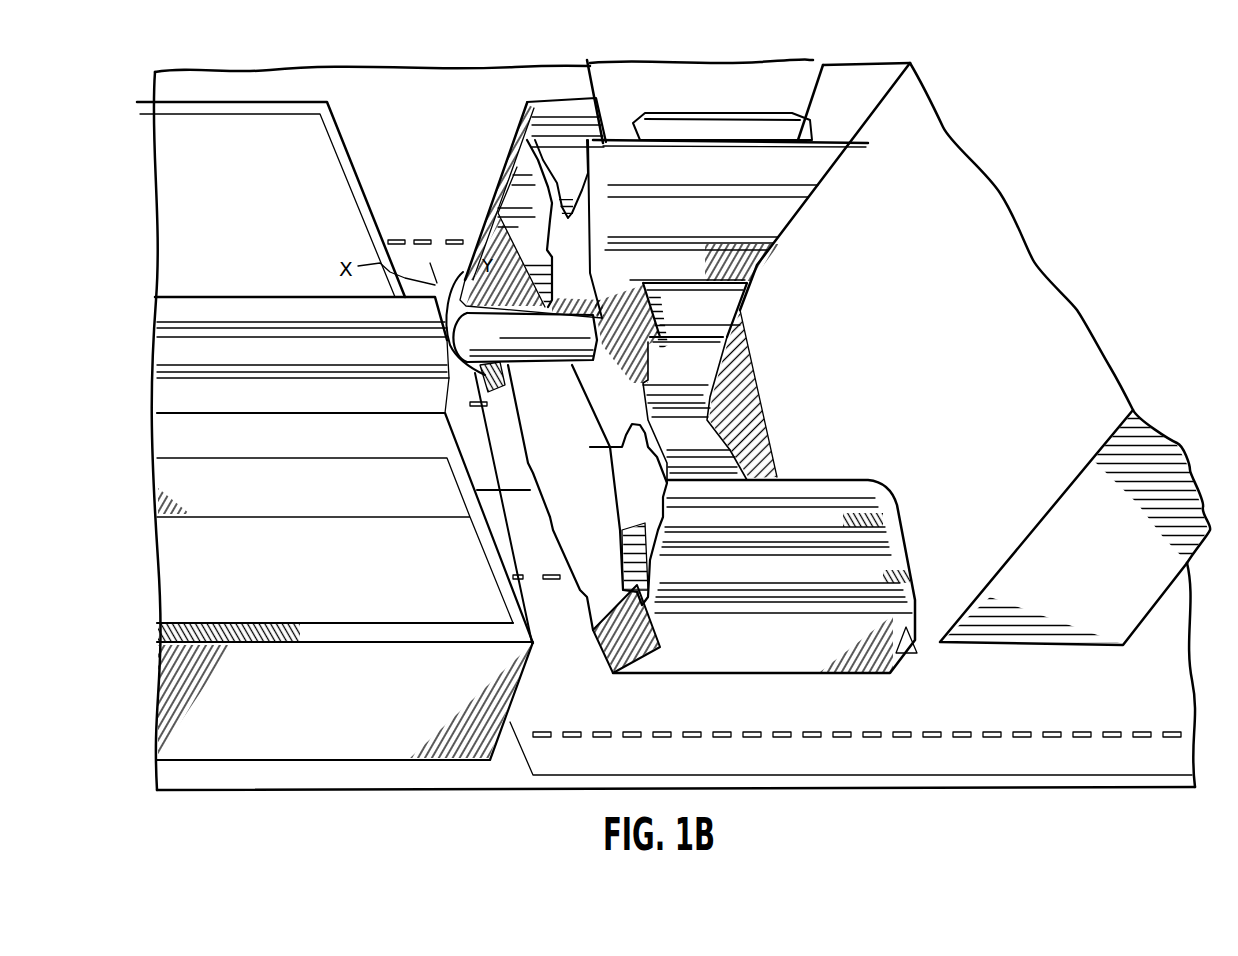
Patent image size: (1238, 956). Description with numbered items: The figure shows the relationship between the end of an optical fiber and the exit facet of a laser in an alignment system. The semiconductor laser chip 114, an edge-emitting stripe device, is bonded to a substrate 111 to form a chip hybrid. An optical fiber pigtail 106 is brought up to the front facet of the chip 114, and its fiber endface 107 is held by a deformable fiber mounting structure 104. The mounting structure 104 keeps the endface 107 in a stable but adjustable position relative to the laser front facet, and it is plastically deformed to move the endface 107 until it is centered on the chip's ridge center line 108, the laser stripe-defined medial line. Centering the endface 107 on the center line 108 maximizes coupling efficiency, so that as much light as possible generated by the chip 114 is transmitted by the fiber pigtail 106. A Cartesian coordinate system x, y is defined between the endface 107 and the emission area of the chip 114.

The deformable fiber mounting structure 104 is at (498, 167).
The optical fiber pigtail 106 is at (482, 373).
The fiber endface 107 is at (456, 345).
The ridge center line 108 is at (233, 336).
The substrate 111 is at (247, 173).
The semiconductor laser chip 114 is at (292, 310).